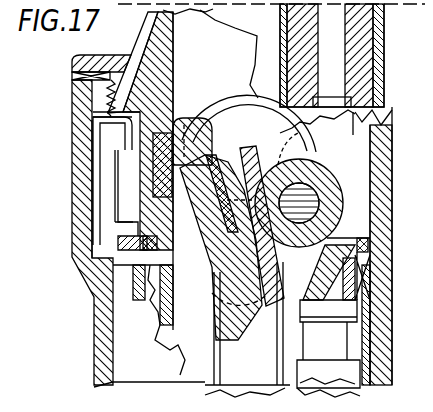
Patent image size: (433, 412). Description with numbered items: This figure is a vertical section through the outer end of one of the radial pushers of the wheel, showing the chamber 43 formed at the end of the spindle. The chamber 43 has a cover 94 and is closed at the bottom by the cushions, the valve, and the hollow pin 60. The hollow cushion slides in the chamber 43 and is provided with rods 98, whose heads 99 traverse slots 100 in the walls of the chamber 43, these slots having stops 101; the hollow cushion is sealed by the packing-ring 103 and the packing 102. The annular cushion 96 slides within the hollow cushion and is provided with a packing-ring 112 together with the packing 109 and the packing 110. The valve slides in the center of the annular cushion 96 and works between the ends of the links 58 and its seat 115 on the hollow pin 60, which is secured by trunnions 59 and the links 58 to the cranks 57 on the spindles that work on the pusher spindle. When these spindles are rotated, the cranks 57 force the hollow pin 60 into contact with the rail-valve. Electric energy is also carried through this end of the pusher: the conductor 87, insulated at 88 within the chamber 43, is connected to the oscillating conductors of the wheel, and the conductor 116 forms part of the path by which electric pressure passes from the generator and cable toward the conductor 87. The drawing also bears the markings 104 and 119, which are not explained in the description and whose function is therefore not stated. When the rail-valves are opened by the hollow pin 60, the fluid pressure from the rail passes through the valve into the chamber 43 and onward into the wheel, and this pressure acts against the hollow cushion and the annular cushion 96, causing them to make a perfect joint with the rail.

The chamber 43 is at (217, 98).
The crank 57 is at (347, 216).
The link 58 is at (316, 170).
The trunnion 59 is at (240, 322).
The hollow pin 60 is at (386, 26).
The conductor 87 is at (170, 96).
The insulation 88 is at (170, 69).
The cover 94 is at (137, 23).
The annular cushion 96 is at (328, 378).
The rod 98 is at (115, 185).
The head 99 is at (113, 181).
The slot 100 is at (118, 240).
The stop 101 is at (112, 255).
The packing 102 is at (394, 184).
The packing-ring 103 is at (394, 143).
The base plate 104 is at (176, 334).
The packing 109 is at (370, 332).
The packing 110 is at (376, 42).
The packing-ring 112 is at (328, 309).
The seat 115 is at (212, 388).
The conductor 116 is at (334, 70).
The piston block 119 is at (182, 147).